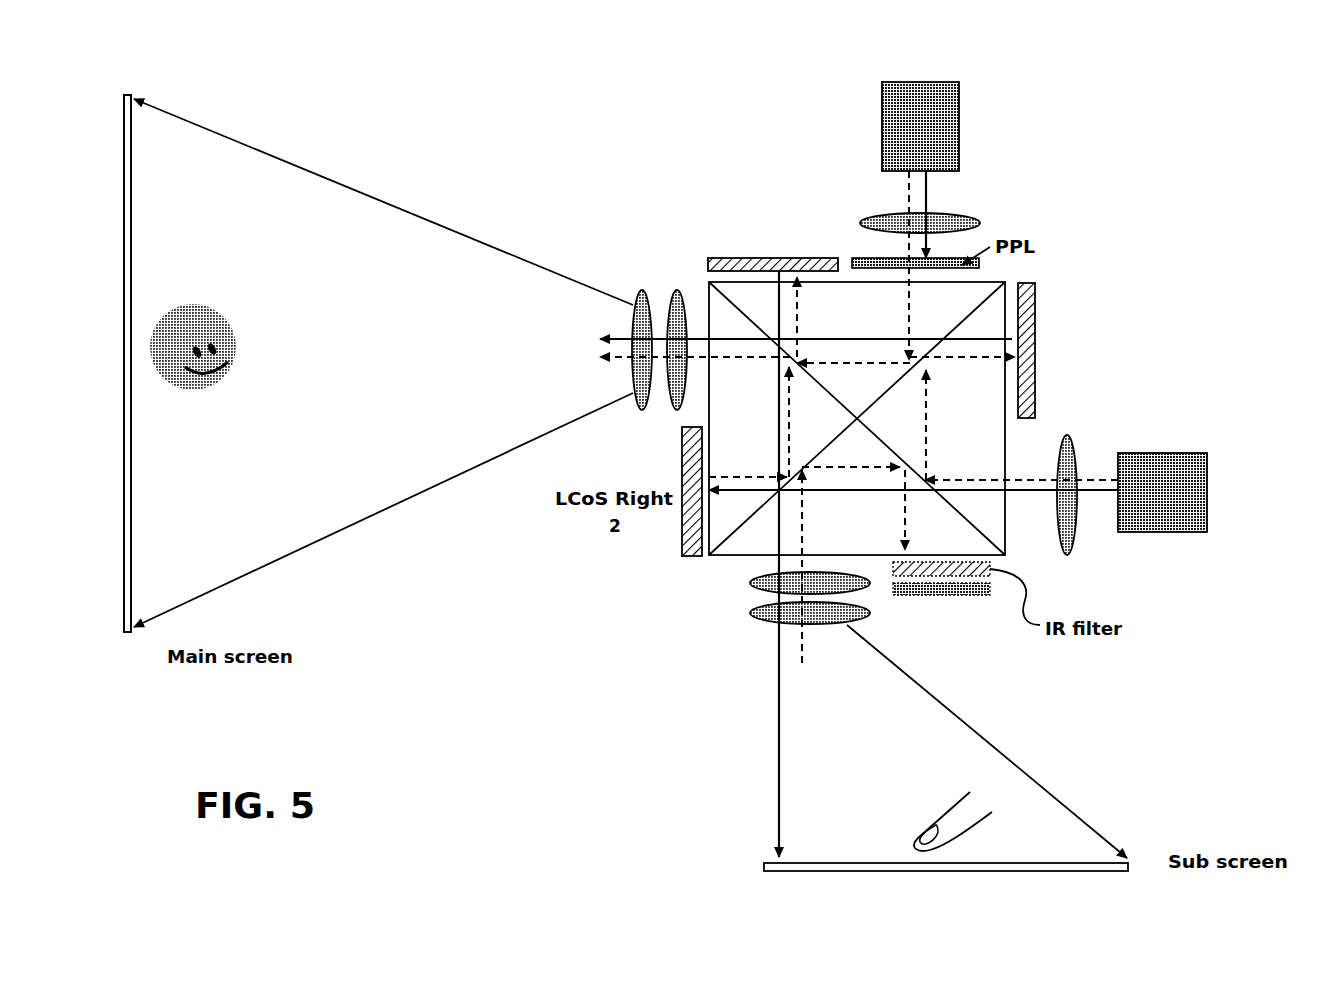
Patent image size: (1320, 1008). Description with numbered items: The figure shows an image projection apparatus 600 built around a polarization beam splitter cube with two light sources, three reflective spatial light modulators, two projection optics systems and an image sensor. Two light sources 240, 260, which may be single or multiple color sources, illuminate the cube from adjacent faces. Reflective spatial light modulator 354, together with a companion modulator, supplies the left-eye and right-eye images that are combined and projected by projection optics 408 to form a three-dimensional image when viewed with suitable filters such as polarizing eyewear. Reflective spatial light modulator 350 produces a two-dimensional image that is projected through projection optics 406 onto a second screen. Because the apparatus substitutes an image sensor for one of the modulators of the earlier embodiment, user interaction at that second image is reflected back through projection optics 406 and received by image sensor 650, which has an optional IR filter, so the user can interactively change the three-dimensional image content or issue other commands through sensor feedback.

The light source 240 is at (890, 149).
The reflective spatial light modulator 350 is at (807, 263).
The reflective spatial light modulator 354 is at (1033, 306).
The light source 260 is at (1178, 470).
The image projection apparatus 600 is at (1188, 208).
The projection optics 408 is at (613, 378).
The projection optics 406 is at (760, 645).
The image sensor 650 is at (967, 627).